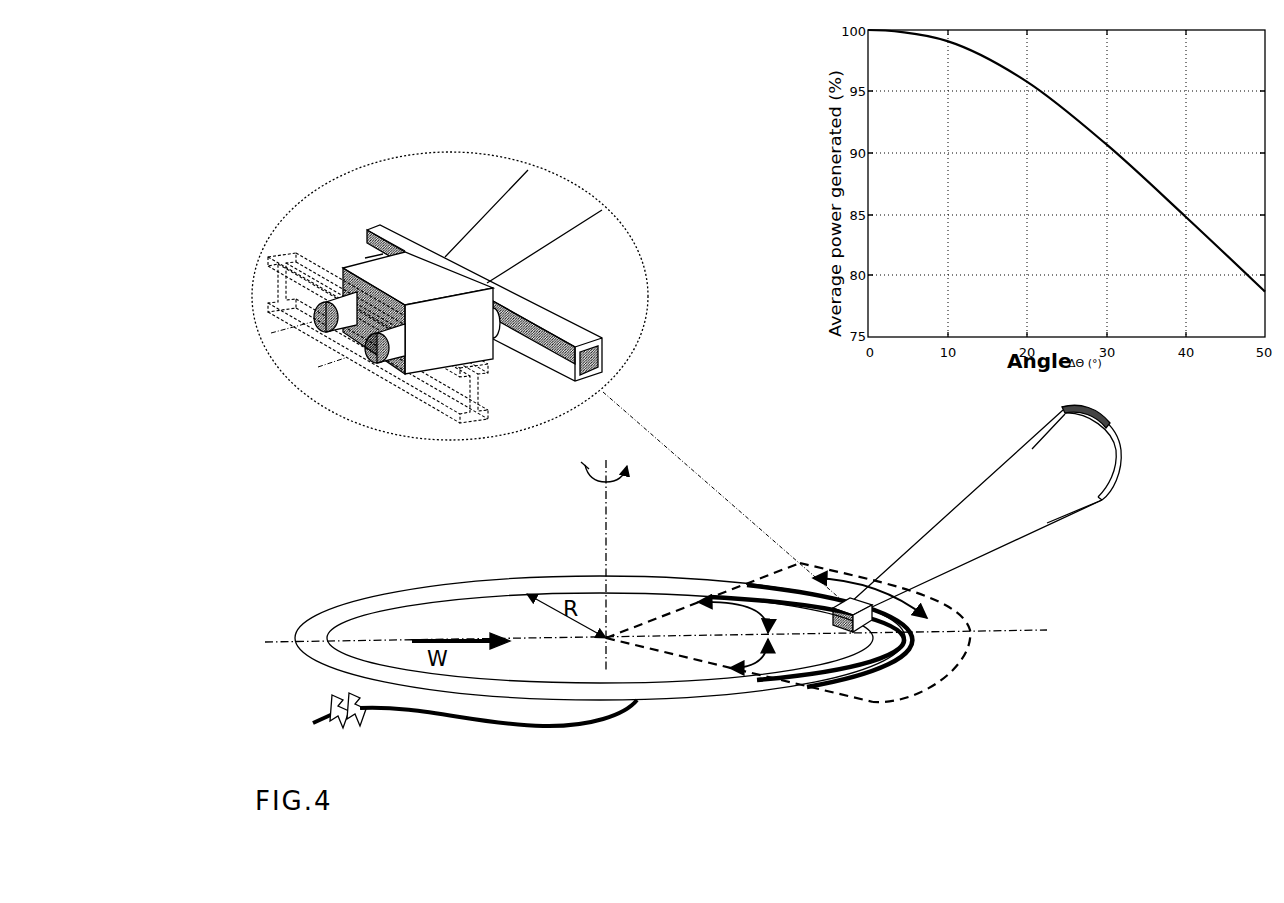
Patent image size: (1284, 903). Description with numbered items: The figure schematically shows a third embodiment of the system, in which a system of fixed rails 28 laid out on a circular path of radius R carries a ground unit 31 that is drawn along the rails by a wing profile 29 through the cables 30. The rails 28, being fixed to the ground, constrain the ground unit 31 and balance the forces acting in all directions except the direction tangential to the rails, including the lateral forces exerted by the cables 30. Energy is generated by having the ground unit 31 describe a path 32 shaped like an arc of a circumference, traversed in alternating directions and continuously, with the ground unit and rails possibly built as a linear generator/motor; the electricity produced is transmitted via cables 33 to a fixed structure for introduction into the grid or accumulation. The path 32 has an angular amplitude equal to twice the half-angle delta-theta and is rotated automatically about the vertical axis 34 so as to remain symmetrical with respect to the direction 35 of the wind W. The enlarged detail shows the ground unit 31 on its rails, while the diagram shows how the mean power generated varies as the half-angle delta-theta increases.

The system of fixed rails 28 is at (600, 624).
The wing profile 29 is at (1096, 464).
The cables 30 is at (976, 508).
The ground unit 31 is at (562, 392).
The path 32 is at (818, 632).
The cables 33 is at (475, 721).
The vertical axis 34 is at (594, 565).
The direction of the wind 35 is at (828, 632).